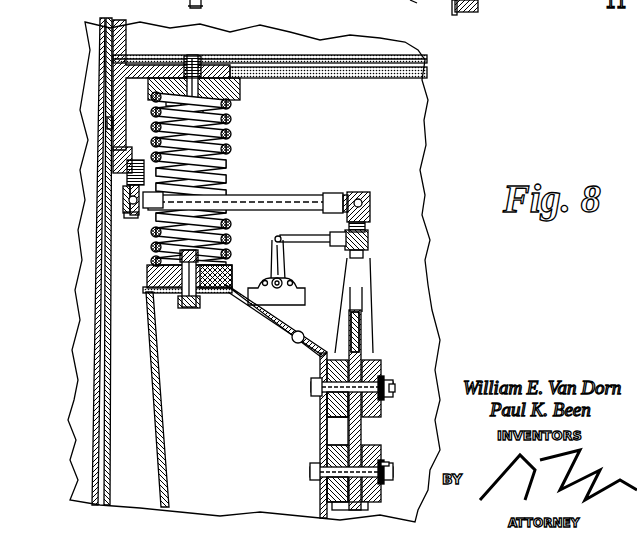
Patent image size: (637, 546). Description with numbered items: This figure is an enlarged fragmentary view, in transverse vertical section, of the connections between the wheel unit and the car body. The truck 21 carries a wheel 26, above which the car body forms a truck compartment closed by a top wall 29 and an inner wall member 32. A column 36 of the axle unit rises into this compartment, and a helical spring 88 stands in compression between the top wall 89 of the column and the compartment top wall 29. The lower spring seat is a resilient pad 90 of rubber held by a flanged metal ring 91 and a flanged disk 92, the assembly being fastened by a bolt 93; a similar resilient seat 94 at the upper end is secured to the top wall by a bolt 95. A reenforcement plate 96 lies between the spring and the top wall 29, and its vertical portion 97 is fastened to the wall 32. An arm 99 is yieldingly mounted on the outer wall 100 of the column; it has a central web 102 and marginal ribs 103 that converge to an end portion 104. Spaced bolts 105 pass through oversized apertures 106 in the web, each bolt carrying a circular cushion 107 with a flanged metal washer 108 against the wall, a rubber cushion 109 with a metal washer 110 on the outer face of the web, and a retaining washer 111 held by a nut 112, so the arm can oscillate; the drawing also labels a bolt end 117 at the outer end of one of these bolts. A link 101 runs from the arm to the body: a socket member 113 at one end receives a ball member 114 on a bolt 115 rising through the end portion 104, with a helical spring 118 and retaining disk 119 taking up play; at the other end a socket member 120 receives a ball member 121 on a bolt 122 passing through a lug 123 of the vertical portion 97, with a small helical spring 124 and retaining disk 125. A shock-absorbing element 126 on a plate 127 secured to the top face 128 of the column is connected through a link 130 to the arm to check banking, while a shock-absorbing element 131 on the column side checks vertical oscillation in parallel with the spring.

The truck 21 is at (417, 2).
The wheel 26 is at (472, 10).
The top wall 29 is at (320, 65).
The wall member 32 is at (98, 312).
The column 36 is at (163, 427).
The helical spring 88 is at (231, 153).
The top wall of column 89 is at (230, 304).
The resilient pad 90 is at (215, 292).
The flanged metal ring 91 is at (147, 284).
The flanged disk 92 is at (210, 250).
The bolt 93 is at (183, 308).
The resilient seat 94 is at (244, 91).
The bolt 95 is at (197, 57).
The reenforcement plate 96 is at (237, 78).
The vertical portion 97 is at (113, 97).
The arm 99 is at (376, 296).
The outer wall 100 is at (322, 408).
The link 101 is at (282, 198).
The central web 102 is at (367, 430).
The marginal rib 103 is at (364, 328).
The end portion 104 is at (368, 247).
The bolt 105 is at (317, 384).
The oversized aperture 106 is at (383, 365).
The circular cushion 107 is at (322, 363).
The flanged metal washer 108 is at (320, 399).
The rubber cushion 109 is at (374, 346).
The metal washer 110 is at (380, 418).
The retaining washer 111 is at (392, 378).
The nut 112 is at (387, 467).
The socket member 113 is at (375, 192).
The ball member 114 is at (358, 190).
The bolt 115 is at (368, 234).
The bolt end 117 is at (397, 388).
The helical spring 118 is at (333, 228).
The retaining disk 119 is at (370, 215).
The socket member 120 is at (121, 226).
The ball member 121 is at (122, 222).
The bolt 122 is at (118, 172).
The lug 123 is at (115, 155).
The small helical spring 124 is at (128, 183).
The retaining disk 125 is at (123, 208).
The shock-absorbing element 126 is at (276, 308).
The plate 127 is at (294, 320).
The top face 128 is at (293, 338).
The link 130 is at (300, 244).
The shock-absorbing element 131 is at (284, 262).